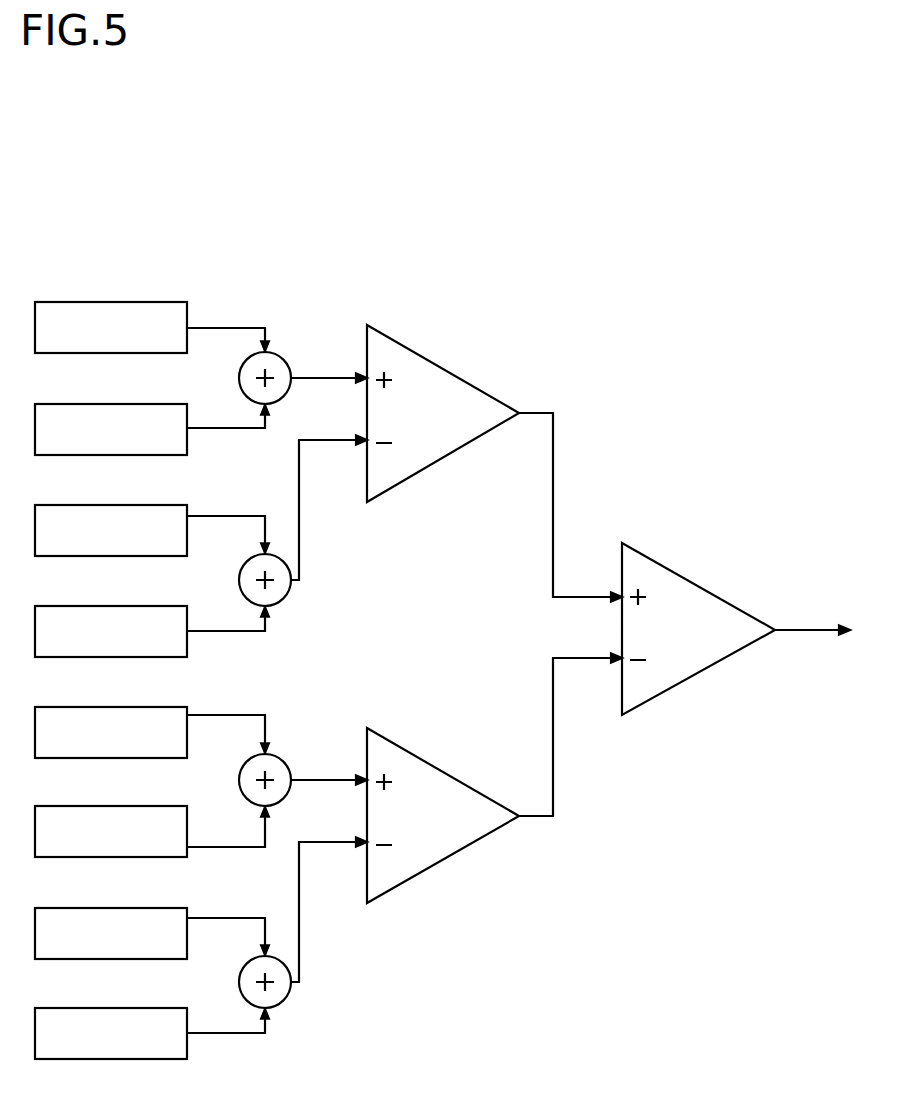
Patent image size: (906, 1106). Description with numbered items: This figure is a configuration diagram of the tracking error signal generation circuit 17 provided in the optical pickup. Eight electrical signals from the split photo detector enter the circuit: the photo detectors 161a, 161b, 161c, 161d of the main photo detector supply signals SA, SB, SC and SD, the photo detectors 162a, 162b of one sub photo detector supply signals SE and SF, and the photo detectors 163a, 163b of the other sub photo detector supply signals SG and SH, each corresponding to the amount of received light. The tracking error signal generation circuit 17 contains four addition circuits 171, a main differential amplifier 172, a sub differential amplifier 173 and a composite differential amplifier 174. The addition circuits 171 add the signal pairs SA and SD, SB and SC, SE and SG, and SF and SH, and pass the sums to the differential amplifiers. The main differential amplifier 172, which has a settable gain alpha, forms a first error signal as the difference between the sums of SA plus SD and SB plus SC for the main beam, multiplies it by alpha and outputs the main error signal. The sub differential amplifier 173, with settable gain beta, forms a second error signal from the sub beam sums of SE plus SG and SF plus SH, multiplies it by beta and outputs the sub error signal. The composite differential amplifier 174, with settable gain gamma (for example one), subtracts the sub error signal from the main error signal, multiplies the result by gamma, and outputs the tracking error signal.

The tracking error signal generation circuit 17 is at (640, 412).
The photo detector 161a is at (127, 302).
The photo detector 161b is at (127, 505).
The photo detector 161c is at (127, 606).
The photo detector 161d is at (127, 404).
The photo detector 162a is at (127, 707).
The photo detector 162b is at (127, 908).
The photo detector 163a is at (127, 806).
The photo detector 163b is at (127, 1008).
The addition circuit 171 is at (287, 366).
The main differential amplifier 172 is at (452, 372).
The sub differential amplifier 173 is at (430, 760).
The composite differential amplifier 174 is at (702, 585).